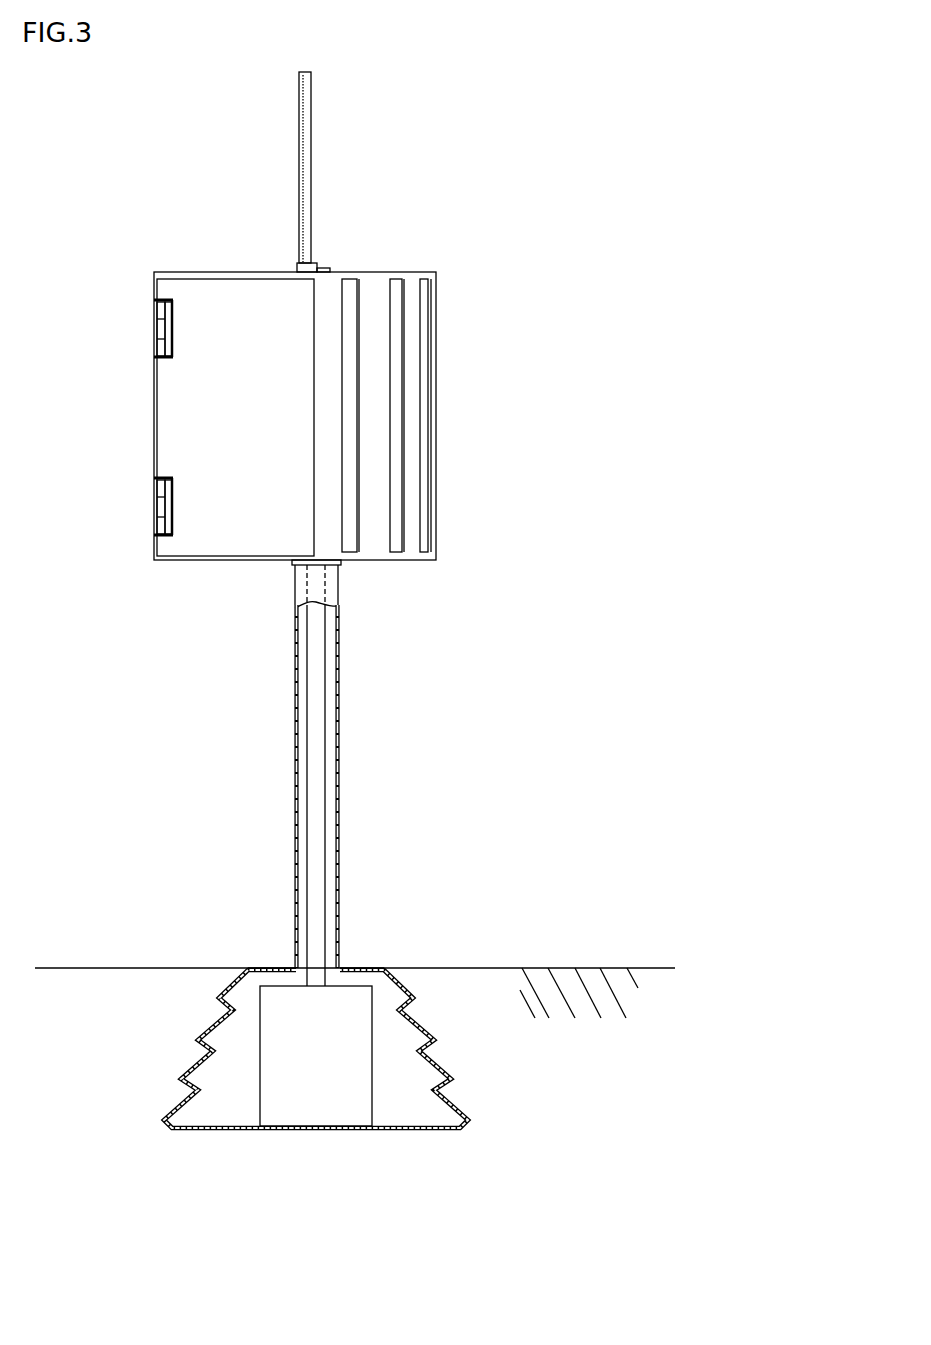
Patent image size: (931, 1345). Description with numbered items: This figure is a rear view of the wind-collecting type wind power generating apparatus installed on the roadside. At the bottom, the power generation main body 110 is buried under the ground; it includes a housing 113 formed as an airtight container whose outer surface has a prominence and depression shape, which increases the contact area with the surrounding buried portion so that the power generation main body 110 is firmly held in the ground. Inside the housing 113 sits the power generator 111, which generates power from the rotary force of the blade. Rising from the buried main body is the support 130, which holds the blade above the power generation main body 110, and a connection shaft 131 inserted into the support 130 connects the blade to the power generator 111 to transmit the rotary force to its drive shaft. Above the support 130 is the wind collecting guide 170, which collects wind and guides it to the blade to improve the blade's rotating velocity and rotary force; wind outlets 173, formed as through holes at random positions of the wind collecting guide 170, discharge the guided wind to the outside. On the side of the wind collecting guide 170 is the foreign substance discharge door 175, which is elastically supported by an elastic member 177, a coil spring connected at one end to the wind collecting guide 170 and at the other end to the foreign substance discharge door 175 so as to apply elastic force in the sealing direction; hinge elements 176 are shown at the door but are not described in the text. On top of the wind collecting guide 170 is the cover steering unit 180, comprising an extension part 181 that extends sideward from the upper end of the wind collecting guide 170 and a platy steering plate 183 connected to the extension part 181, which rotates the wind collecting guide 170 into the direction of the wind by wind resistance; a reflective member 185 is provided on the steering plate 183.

The power generation main body 110 is at (285, 1025).
The power generator 111 is at (272, 1085).
The housing 113 is at (228, 987).
The support 130 is at (271, 773).
The connection shaft 131 is at (315, 750).
The wind collecting guide 170 is at (296, 381).
The wind outlets 173 is at (352, 325).
The foreign substance discharge door 175 is at (185, 414).
The hinge 176 is at (162, 323).
The elastic member 177 is at (156, 298).
The cover steering unit 180 is at (295, 172).
The extension part 181 is at (317, 263).
The steering plate 183 is at (307, 168).
The reflective member 185 is at (300, 188).